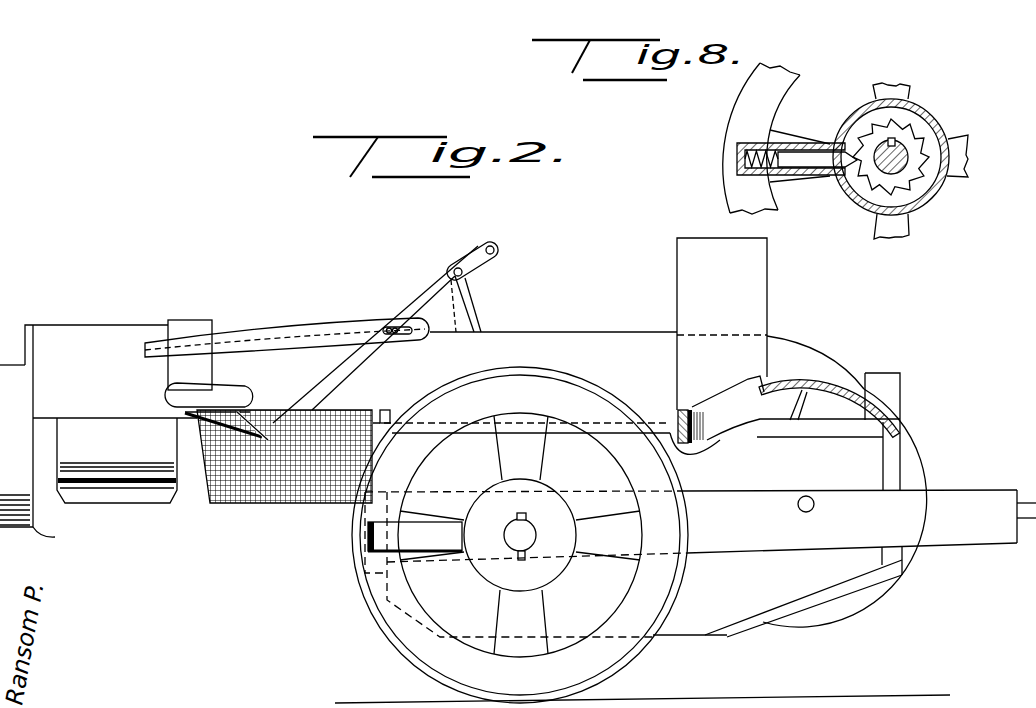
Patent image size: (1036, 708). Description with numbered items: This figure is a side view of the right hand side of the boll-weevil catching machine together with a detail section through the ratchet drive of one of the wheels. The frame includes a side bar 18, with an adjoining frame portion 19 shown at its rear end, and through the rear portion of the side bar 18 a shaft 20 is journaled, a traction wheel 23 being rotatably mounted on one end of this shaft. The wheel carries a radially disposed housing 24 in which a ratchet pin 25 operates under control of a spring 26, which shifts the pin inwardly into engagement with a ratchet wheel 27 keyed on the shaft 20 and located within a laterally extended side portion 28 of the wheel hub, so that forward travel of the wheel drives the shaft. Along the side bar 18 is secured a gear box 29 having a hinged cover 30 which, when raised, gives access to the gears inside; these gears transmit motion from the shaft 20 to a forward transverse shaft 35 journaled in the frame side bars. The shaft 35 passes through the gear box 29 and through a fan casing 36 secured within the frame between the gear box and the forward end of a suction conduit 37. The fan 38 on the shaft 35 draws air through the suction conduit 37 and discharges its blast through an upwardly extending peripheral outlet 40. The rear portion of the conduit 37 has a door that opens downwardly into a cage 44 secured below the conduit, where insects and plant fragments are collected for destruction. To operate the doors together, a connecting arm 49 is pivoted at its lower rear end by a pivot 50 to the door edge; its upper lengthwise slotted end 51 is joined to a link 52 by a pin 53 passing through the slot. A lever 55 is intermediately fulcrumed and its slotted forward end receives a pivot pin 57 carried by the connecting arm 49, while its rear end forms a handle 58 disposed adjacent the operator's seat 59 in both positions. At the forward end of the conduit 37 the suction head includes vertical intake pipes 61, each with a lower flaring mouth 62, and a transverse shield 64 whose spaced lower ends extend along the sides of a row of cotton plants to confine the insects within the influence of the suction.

In FIG. 2, the side bar 18 is at (691, 563).
In FIG. 2, the frame bar end 19 is at (1033, 522).
In FIG. 8, the shaft 20 is at (905, 168).
In FIG. 2, the shaft 20 is at (527, 532).
In FIG. 2, the wheel 23 is at (673, 533).
In FIG. 8, the housing 24 is at (787, 177).
In FIG. 2, the housing 24 is at (430, 530).
In FIG. 8, the ratchet pin 25 is at (812, 155).
In FIG. 2, the ratchet pin 25 is at (460, 553).
In FIG. 8, the spring 26 is at (740, 170).
In FIG. 8, the ratchet wheel 27 is at (917, 143).
In FIG. 8, the laterally extended side portion 28 is at (867, 207).
In FIG. 2, the gear box 29 is at (785, 430).
In FIG. 2, the hinged cover 30 is at (662, 432).
In FIG. 2, the forward transverse shaft 35 is at (803, 512).
In FIG. 2, the fan casing 36 is at (910, 463).
In FIG. 2, the suction conduit 37 is at (133, 335).
In FIG. 2, the fan 38 is at (825, 383).
In FIG. 2, the peripheral outlet 40 is at (750, 311).
In FIG. 2, the cage 44 is at (245, 505).
In FIG. 2, the connecting arm 49 is at (420, 292).
In FIG. 2, the pivot 50 is at (280, 410).
In FIG. 2, the lengthwise slotted end 51 is at (500, 253).
In FIG. 2, the link 52 is at (470, 315).
In FIG. 2, the pin 53 is at (467, 280).
In FIG. 2, the lever 55 is at (335, 320).
In FIG. 2, the pivot pin 57 is at (392, 336).
In FIG. 2, the handle 58 is at (222, 343).
In FIG. 2, the operator's seat 59 is at (165, 395).
In FIG. 2, the vertical intake pipes 61 is at (16, 446).
In FIG. 2, the flaring mouth 62 is at (60, 534).
In FIG. 2, the transverse shield 64 is at (117, 460).